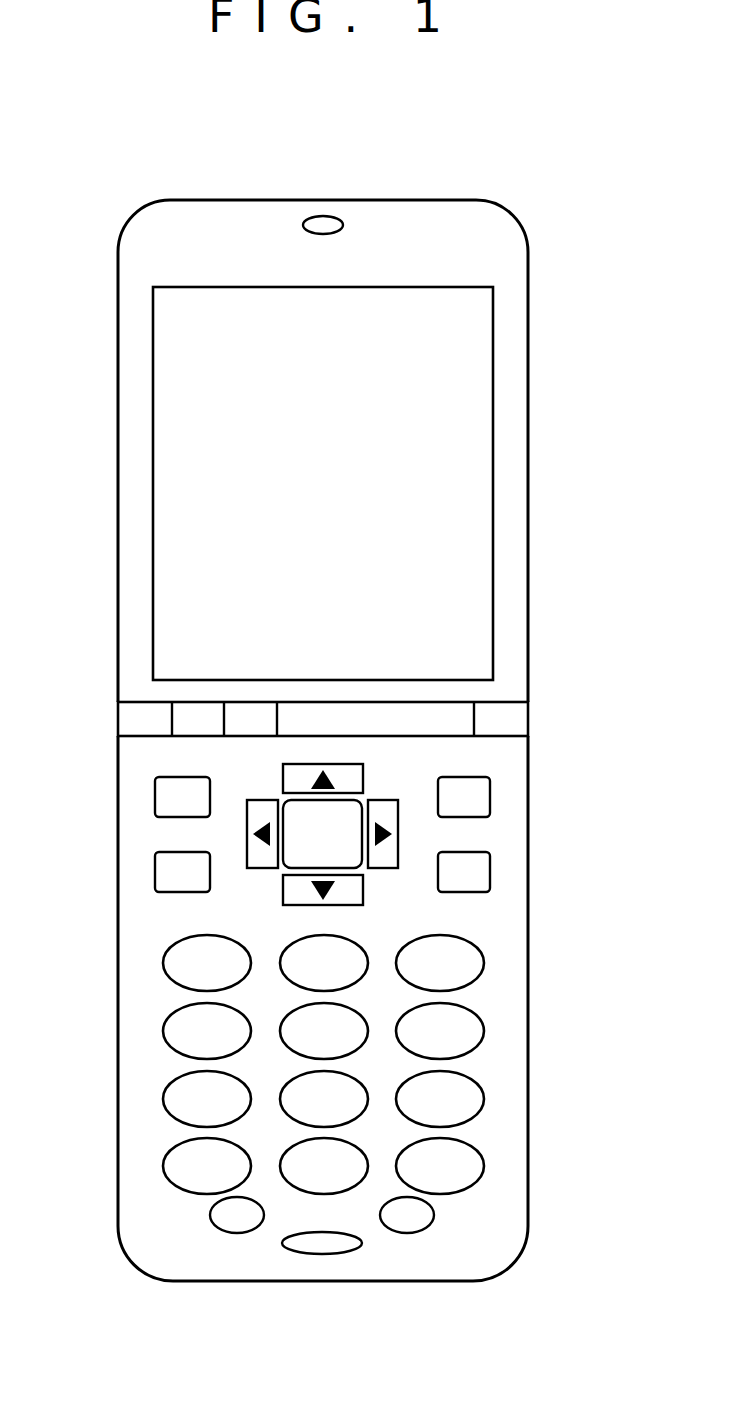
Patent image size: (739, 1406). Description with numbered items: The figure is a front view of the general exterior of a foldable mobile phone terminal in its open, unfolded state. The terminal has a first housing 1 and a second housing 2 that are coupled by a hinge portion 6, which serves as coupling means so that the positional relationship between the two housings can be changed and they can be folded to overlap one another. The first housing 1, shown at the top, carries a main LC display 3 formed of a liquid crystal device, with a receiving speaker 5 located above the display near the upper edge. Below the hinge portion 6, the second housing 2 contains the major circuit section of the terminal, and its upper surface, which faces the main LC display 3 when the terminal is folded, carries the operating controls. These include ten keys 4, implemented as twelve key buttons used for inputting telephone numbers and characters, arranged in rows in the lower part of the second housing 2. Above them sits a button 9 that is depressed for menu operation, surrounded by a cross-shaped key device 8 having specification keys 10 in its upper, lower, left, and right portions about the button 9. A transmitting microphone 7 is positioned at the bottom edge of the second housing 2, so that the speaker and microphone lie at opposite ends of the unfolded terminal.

The first housing 1 is at (528, 486).
The second housing 2 is at (528, 1064).
The main LC display 3 is at (153, 485).
The ten keys 4 is at (162, 1098).
The receiving speaker 5 is at (324, 216).
The hinge portion 6 is at (528, 718).
The transmitting microphone 7 is at (323, 1255).
The cross-shaped key device 8 is at (328, 769).
The button 9 is at (284, 802).
The specification keys 10 is at (363, 888).